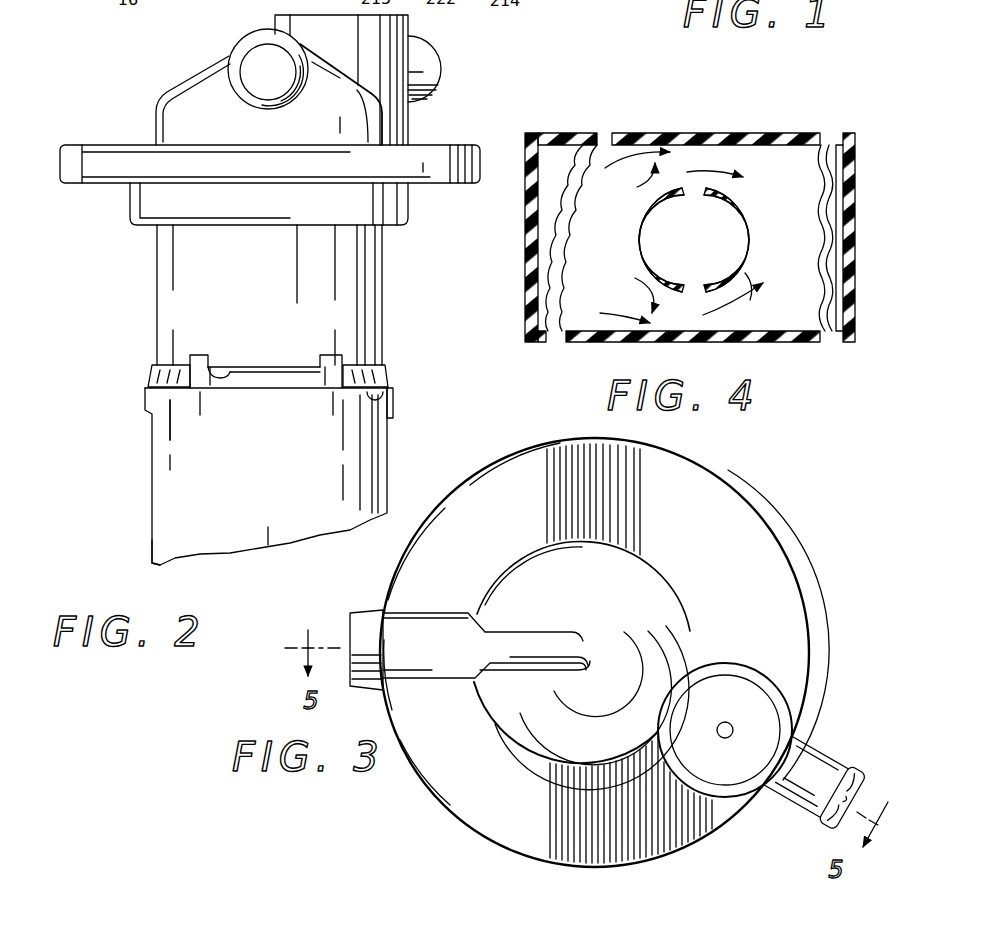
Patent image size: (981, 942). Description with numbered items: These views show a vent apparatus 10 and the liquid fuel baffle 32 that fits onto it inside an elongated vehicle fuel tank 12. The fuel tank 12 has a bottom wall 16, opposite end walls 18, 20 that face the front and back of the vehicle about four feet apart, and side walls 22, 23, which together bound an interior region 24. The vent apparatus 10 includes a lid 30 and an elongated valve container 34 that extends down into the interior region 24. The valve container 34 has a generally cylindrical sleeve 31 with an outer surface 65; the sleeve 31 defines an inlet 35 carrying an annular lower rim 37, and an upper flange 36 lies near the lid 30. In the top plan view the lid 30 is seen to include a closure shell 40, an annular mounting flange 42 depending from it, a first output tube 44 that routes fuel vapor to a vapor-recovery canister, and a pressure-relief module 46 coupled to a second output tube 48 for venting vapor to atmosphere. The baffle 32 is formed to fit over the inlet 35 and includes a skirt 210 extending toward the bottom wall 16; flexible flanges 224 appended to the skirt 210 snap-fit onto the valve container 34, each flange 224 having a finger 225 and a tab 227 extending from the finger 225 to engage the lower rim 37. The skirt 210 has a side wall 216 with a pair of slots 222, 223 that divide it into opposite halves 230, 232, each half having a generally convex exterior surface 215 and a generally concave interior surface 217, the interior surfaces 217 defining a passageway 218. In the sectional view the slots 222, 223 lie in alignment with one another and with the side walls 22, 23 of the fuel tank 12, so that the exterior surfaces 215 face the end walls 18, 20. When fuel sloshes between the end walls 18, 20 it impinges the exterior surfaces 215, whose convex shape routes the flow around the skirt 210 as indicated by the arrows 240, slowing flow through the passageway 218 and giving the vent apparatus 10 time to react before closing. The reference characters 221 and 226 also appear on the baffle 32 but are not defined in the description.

In FIG. 3, the vent apparatus 10 is at (608, 625).
In FIG. 4, the fuel tank 12 is at (670, 245).
In FIG. 4, the bottom wall 16 is at (808, 325).
In FIG. 4, the end wall 18 is at (526, 270).
In FIG. 4, the end wall 20 is at (848, 343).
In FIG. 4, the side wall 22 is at (727, 133).
In FIG. 4, the side wall 23 is at (722, 342).
In FIG. 4, the interior region 24 is at (553, 157).
In FIG. 2, the lid 30 is at (261, 120).
In FIG. 3, the lid 30 is at (663, 441).
In FIG. 2, the sleeve 31 is at (167, 313).
In FIG. 2, the liquid fuel baffle 32 is at (265, 448).
In FIG. 2, the valve container 34 is at (253, 321).
In FIG. 2, the inlet 35 is at (391, 398).
In FIG. 2, the upper flange 36 is at (414, 219).
In FIG. 2, the annular lower rim 37 is at (376, 364).
In FIG. 2, the closure shell 40 is at (269, 72).
In FIG. 3, the closure shell 40 is at (656, 572).
In FIG. 2, the annular mounting flange 42 is at (60, 160).
In FIG. 3, the annular mounting flange 42 is at (553, 436).
In FIG. 2, the first output tube 44 is at (308, 44).
In FIG. 3, the first output tube 44 is at (420, 637).
In FIG. 2, the pressure-relief module 46 is at (398, 34).
In FIG. 3, the pressure-relief module 46 is at (774, 665).
In FIG. 2, the second output tube 48 is at (424, 57).
In FIG. 3, the second output tube 48 is at (827, 760).
In FIG. 2, the outer surface 65 is at (365, 310).
In FIG. 2, the skirt 210 is at (160, 548).
In FIG. 2, the exterior surface 215 is at (268, 528).
In FIG. 4, the exterior surface 215 is at (655, 213).
In FIG. 4, the side wall 216 is at (643, 229).
In FIG. 4, the interior surface 217 is at (740, 251).
In FIG. 4, the passageway 218 is at (657, 245).
In FIG. 2, the rim 221 is at (256, 385).
In FIG. 2, the slot 222 is at (150, 467).
In FIG. 4, the slot 222 is at (692, 283).
In FIG. 2, the slot 223 is at (387, 473).
In FIG. 4, the slot 223 is at (672, 183).
In FIG. 2, the flange 224 is at (200, 357).
In FIG. 2, the finger 225 is at (199, 392).
In FIG. 2, the inner wall line 226 is at (203, 425).
In FIG. 2, the tab 227 is at (233, 367).
In FIG. 2, the half 230 is at (195, 545).
In FIG. 4, the half 230 is at (640, 265).
In FIG. 4, the half 232 is at (746, 273).
In FIG. 4, the arrow 240 is at (620, 157).